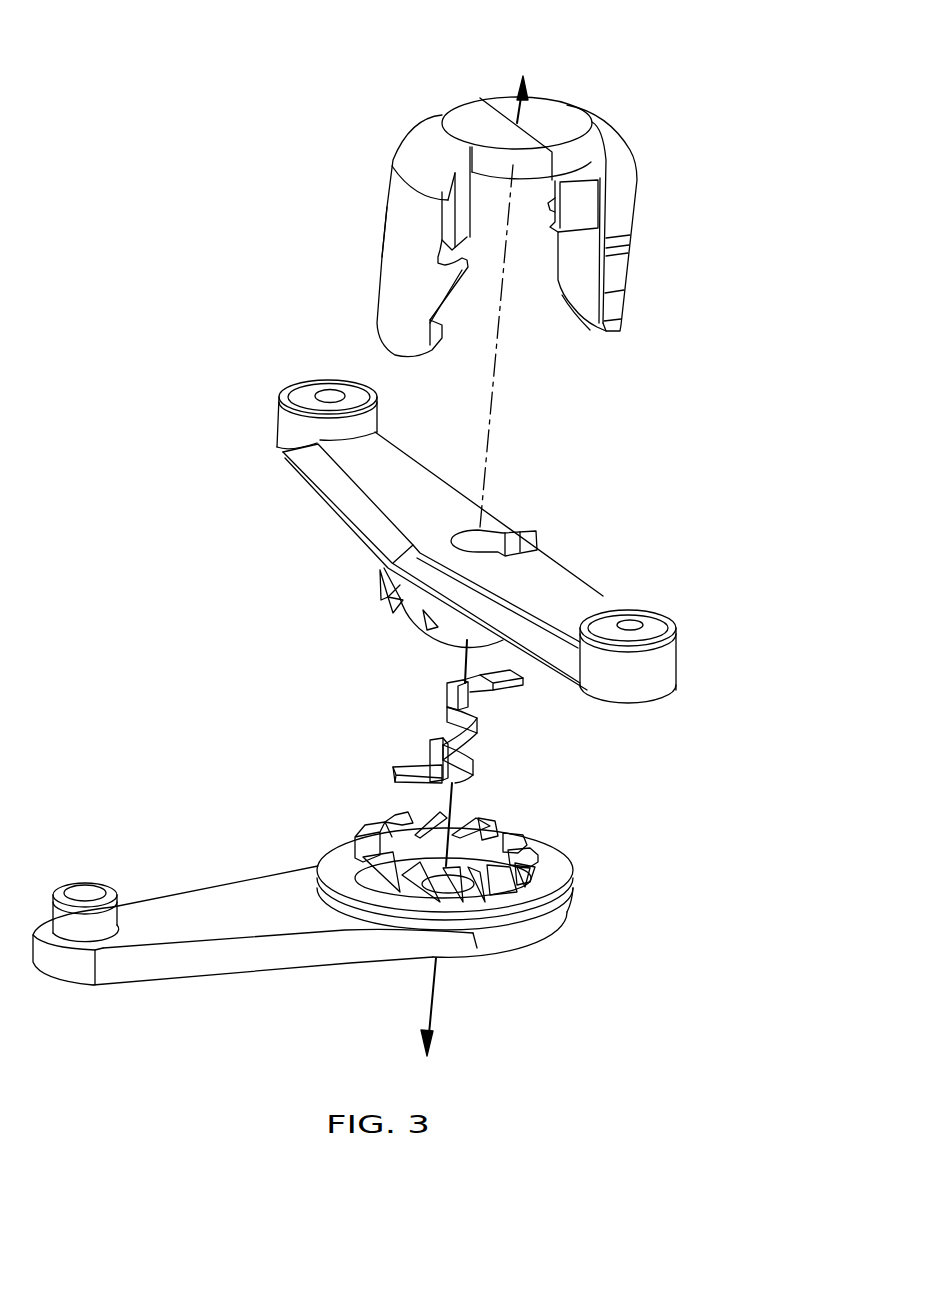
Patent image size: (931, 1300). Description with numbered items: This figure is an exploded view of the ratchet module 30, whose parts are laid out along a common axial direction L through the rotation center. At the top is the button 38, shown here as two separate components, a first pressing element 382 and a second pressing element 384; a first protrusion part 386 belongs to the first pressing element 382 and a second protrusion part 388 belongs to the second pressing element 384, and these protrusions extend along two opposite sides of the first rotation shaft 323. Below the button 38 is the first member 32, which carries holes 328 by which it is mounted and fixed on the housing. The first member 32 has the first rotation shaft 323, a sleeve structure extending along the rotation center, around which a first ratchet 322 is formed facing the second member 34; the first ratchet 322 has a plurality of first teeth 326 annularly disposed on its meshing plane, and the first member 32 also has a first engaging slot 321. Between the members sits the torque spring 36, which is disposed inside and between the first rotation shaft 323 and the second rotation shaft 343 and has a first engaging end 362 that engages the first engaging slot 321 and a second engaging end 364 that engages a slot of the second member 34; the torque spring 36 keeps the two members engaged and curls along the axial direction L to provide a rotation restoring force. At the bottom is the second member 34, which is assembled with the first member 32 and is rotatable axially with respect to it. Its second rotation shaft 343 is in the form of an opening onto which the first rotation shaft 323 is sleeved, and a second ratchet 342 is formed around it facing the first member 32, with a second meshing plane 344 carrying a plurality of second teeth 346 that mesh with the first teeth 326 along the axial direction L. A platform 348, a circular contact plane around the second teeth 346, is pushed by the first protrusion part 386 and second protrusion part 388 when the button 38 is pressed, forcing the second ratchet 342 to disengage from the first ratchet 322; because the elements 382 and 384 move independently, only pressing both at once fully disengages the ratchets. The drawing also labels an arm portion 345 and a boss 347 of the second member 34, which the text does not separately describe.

The ratchet module 30 is at (254, 117).
The axial direction L is at (430, 1007).
The button 38 is at (643, 60).
The first pressing element 382 is at (434, 160).
The second pressing element 384 is at (607, 127).
The first protrusion part 386 is at (402, 273).
The second protrusion part 388 is at (578, 293).
The first member 32 is at (297, 492).
The holes 328 is at (327, 393).
The first engaging slot 321 is at (513, 538).
The first ratchet 322 is at (401, 629).
The first rotation shaft 323 is at (438, 628).
The first teeth 326 is at (383, 598).
The torque spring 36 is at (482, 742).
The first engaging end 362 is at (520, 690).
The second engaging end 364 is at (397, 768).
The second member 34 is at (320, 972).
The second ratchet 342 is at (540, 932).
The second rotation shaft 343 is at (463, 884).
The second meshing plane 344 is at (348, 827).
The arm 345 is at (190, 923).
The second teeth 346 is at (540, 867).
The boss 347 is at (84, 886).
The platform 348 is at (547, 892).